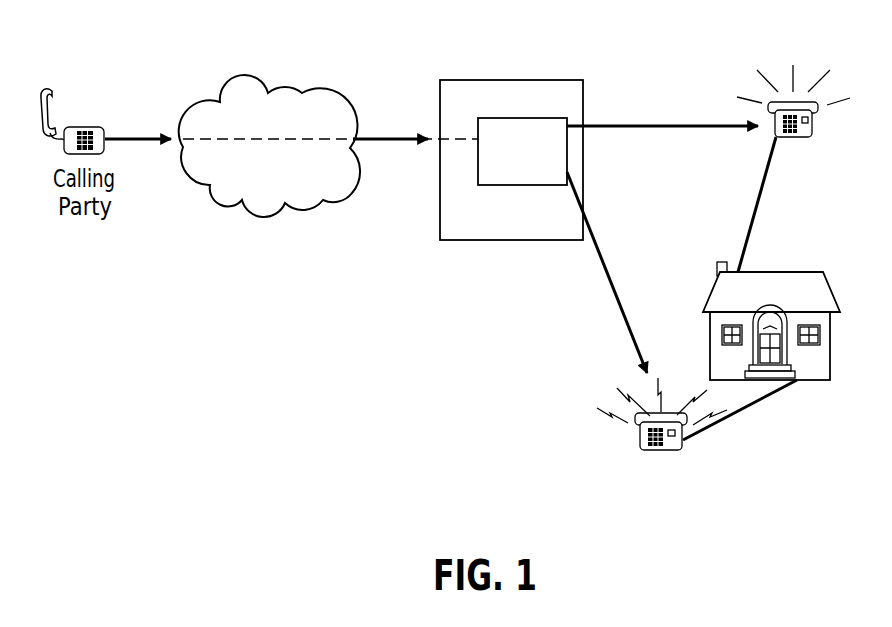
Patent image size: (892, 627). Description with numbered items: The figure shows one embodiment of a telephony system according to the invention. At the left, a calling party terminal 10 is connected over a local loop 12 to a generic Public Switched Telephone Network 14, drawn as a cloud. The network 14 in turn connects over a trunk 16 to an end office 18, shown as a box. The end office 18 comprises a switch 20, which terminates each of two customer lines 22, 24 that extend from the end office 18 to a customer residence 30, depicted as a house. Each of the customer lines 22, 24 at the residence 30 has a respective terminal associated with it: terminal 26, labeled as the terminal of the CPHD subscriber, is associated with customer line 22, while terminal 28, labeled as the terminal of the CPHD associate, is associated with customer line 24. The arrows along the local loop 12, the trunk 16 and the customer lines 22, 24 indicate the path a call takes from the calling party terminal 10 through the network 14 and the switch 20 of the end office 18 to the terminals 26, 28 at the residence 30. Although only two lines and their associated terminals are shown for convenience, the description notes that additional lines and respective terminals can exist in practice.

The calling party terminal 10 is at (88, 127).
The local loop 12 is at (151, 142).
The Public Switched Telephone Network 14 is at (258, 222).
The trunk 16 is at (389, 138).
The end office 18 is at (558, 80).
The switch 20 is at (478, 172).
The customer line 22 is at (633, 126).
The customer line 24 is at (598, 238).
The terminal 26 is at (788, 102).
The terminal 28 is at (640, 443).
The customer residence 30 is at (831, 356).